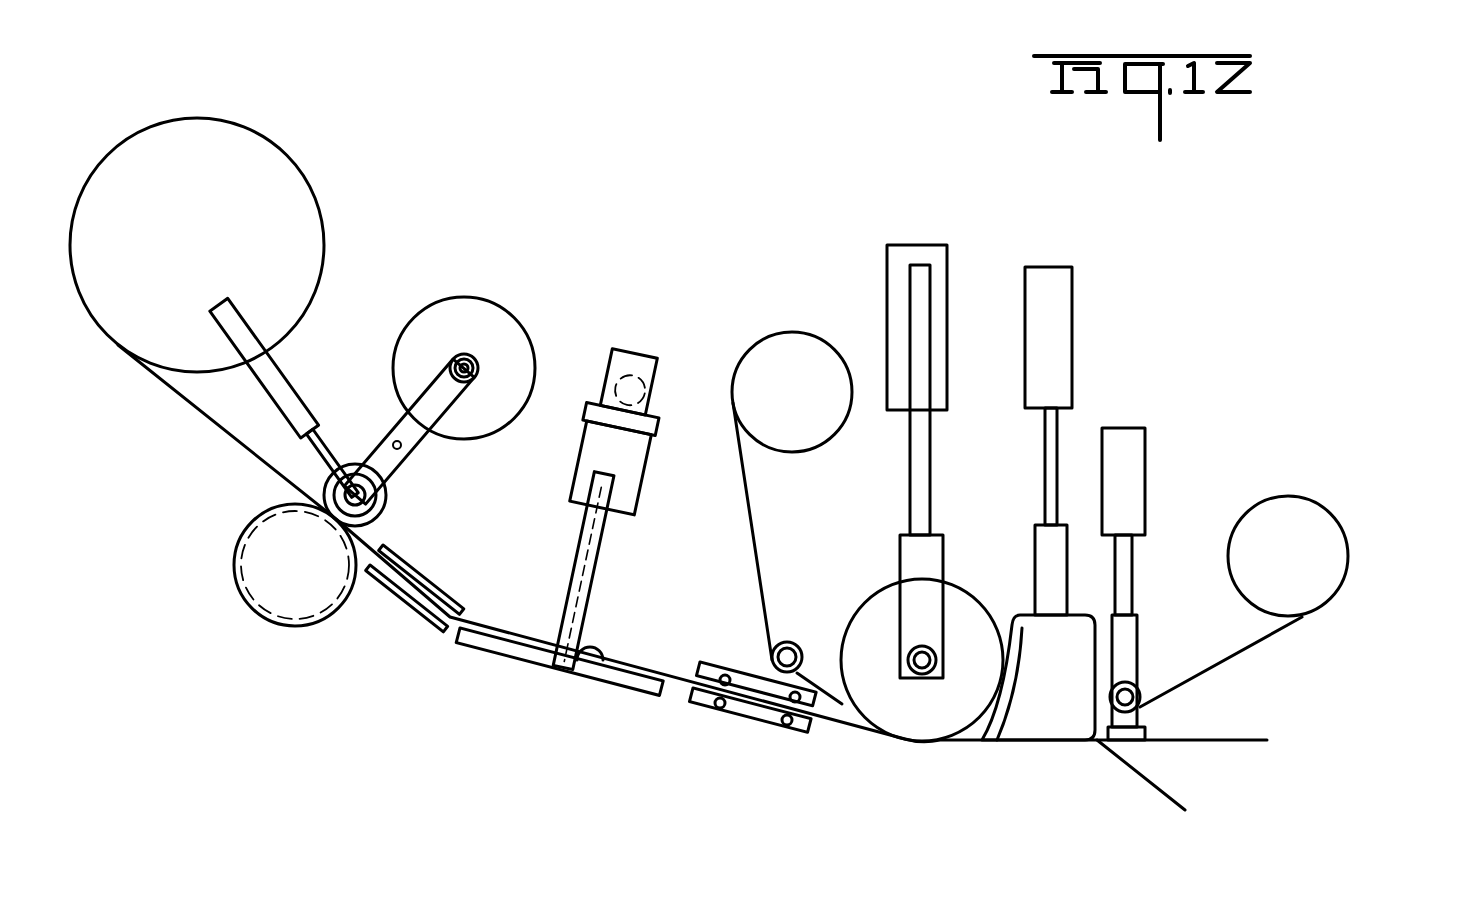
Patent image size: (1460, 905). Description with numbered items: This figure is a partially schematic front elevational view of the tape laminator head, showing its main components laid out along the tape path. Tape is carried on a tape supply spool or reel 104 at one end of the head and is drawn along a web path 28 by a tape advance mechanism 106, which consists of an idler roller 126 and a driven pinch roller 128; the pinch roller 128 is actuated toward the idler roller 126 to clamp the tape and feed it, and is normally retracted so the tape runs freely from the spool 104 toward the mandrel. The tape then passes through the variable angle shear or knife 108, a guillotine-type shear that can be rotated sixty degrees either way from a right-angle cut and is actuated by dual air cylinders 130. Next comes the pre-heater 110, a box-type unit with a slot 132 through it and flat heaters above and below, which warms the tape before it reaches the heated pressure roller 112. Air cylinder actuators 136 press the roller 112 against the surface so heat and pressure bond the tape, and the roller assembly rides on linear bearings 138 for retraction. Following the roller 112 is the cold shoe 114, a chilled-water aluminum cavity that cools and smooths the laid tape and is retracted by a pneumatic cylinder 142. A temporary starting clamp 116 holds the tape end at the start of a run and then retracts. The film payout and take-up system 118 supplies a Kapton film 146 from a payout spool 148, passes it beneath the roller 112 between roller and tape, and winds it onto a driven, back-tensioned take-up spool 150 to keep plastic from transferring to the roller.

The web 28 is at (225, 432).
The tape supply spool 104 is at (288, 176).
The tape advance mechanism 106 is at (275, 585).
The variable angle shear or knife 108 is at (598, 684).
The pre-heater 110 is at (750, 718).
The heated pressure roller 112 is at (905, 725).
The cold shoe 114 is at (1055, 735).
The temporary starting clamp 116 is at (1140, 742).
The film payout and take-up system 118 is at (1317, 500).
The idler roller 126 is at (320, 618).
The driven pinch roller 128 is at (386, 500).
The dual air cylinders 130 is at (636, 490).
The slot 132 is at (700, 688).
The air cylinder actuators 136 is at (947, 288).
The linear bearings 138 is at (938, 565).
The pneumatic cylinder 142 is at (1072, 347).
The film 146 is at (757, 548).
The payout spool 148 is at (808, 343).
The take-up spool 150 is at (1313, 553).